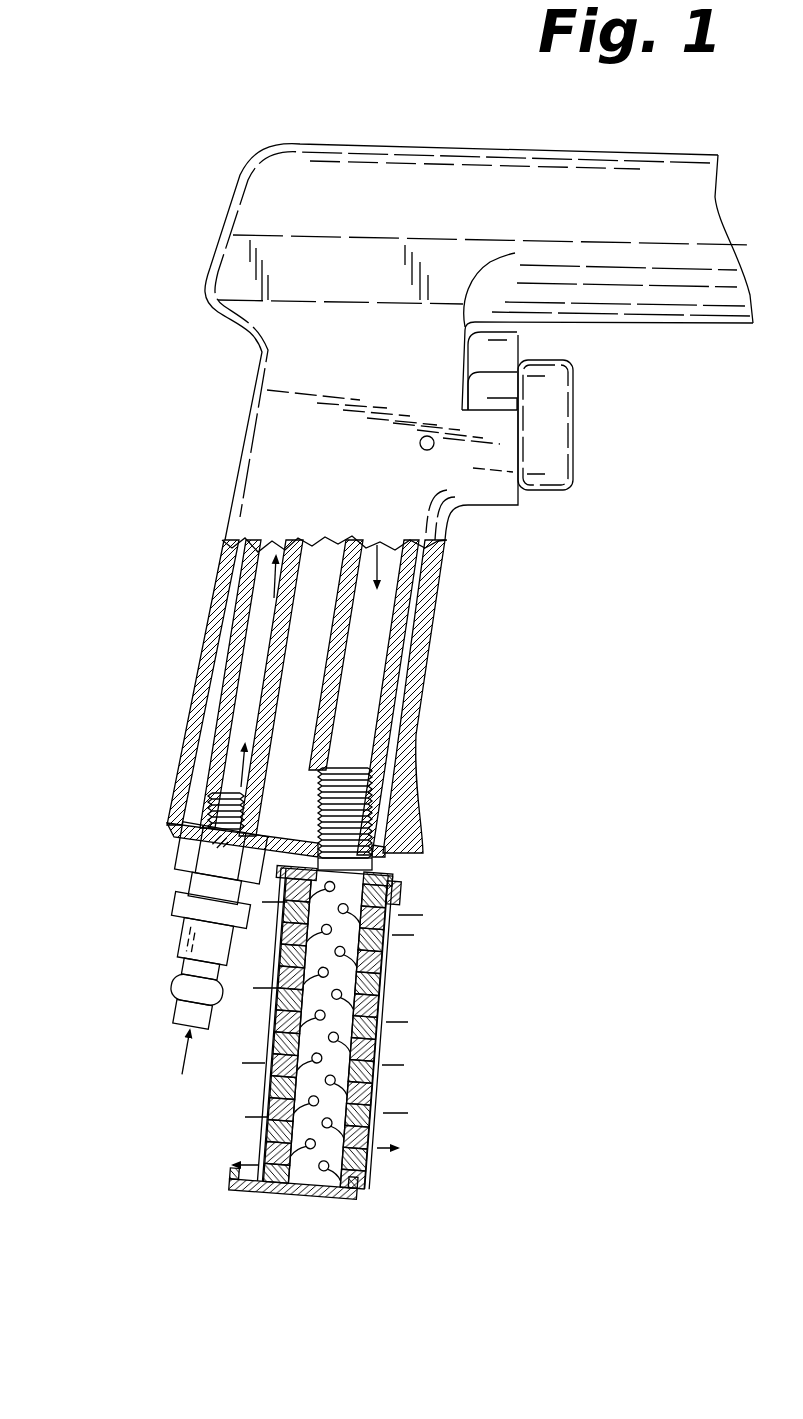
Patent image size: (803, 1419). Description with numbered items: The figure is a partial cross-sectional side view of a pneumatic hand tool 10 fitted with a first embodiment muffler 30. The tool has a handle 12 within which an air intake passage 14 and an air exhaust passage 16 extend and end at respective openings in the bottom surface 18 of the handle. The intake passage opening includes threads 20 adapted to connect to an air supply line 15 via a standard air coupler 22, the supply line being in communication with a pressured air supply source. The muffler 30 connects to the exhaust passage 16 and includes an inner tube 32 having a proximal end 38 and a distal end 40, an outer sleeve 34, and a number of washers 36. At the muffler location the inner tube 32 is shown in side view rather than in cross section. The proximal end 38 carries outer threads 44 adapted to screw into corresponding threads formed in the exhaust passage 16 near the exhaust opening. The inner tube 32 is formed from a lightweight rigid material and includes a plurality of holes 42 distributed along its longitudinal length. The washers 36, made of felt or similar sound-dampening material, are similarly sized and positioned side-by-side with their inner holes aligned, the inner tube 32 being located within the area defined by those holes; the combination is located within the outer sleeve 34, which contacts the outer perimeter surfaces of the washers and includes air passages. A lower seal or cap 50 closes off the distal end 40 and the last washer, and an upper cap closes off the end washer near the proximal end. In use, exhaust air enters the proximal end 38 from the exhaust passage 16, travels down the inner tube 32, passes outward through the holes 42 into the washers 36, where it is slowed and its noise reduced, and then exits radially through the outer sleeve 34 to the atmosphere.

The pneumatic hand tool 10 is at (212, 142).
The handle 12 is at (205, 632).
The air intake passage 14 is at (250, 686).
The air supply line 15 is at (178, 1018).
The air exhaust passage 16 is at (360, 670).
The bottom surface 18 is at (390, 855).
The threads 20 is at (205, 812).
The air coupler 22 is at (175, 935).
The muffler 30 is at (472, 1203).
The inner tube 32 is at (300, 1200).
The outer sleeve 34 is at (388, 1045).
The washers 36 is at (390, 992).
The proximal end 38 is at (382, 802).
The distal end 40 is at (323, 1192).
The holes 42 is at (386, 1078).
The outer threads 44 is at (403, 810).
The lower seal or cap 50 is at (255, 1185).